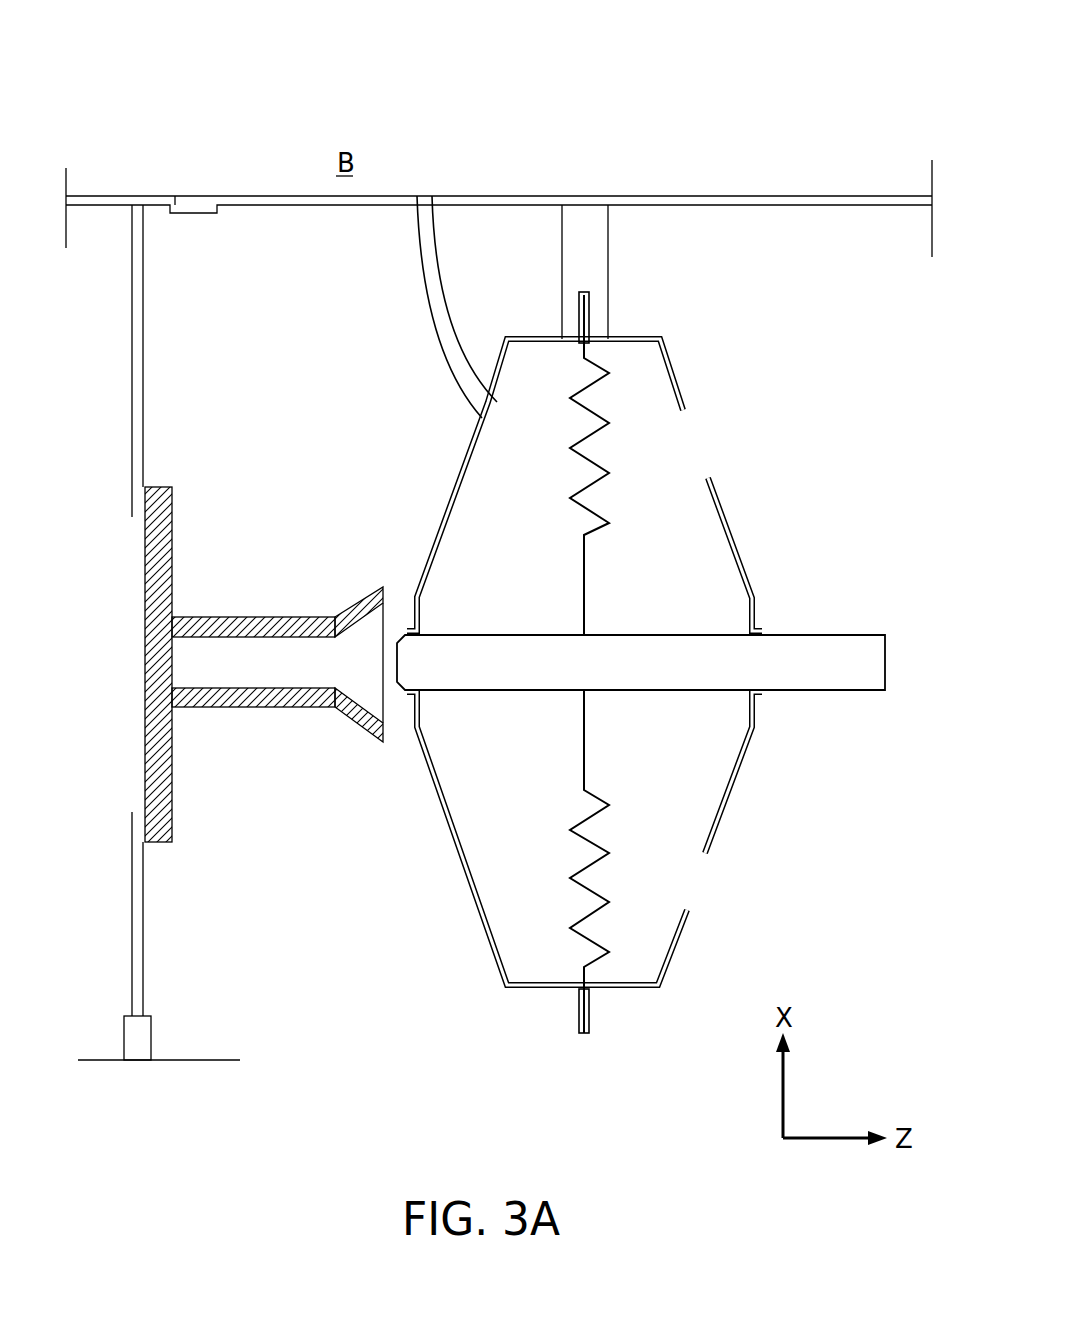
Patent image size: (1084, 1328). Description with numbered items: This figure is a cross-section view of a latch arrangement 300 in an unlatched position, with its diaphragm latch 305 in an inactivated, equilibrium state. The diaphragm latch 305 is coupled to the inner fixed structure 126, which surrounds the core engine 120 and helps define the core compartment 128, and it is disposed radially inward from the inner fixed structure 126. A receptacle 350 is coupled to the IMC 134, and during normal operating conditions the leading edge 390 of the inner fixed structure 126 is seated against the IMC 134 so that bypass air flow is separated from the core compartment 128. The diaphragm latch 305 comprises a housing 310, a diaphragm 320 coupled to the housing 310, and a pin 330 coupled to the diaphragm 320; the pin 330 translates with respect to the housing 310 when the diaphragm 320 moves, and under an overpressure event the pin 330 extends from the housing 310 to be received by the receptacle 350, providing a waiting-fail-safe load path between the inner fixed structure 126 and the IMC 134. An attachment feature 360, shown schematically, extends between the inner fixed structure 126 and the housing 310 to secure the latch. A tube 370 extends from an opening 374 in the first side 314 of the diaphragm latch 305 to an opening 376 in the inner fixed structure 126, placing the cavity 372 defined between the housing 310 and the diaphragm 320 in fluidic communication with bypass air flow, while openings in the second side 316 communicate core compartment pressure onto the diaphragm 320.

The core engine 120 is at (137, 1033).
The inner fixed structure 126 is at (665, 195).
The core compartment 128 is at (404, 262).
The IMC 134 is at (140, 335).
The latch arrangement 300 is at (763, 108).
The diaphragm latch 305 is at (820, 353).
The housing 310 is at (605, 662).
The first side 314 is at (450, 490).
The second side 316 is at (745, 570).
The diaphragm 320 is at (583, 742).
The pin 330 is at (658, 635).
The receptacle 350 is at (268, 615).
The attachment feature 360 is at (608, 258).
The tube 370 is at (437, 262).
The cavity 372 is at (530, 549).
The opening 374 is at (488, 416).
The opening 376 is at (428, 198).
The leading edge 390 is at (183, 176).